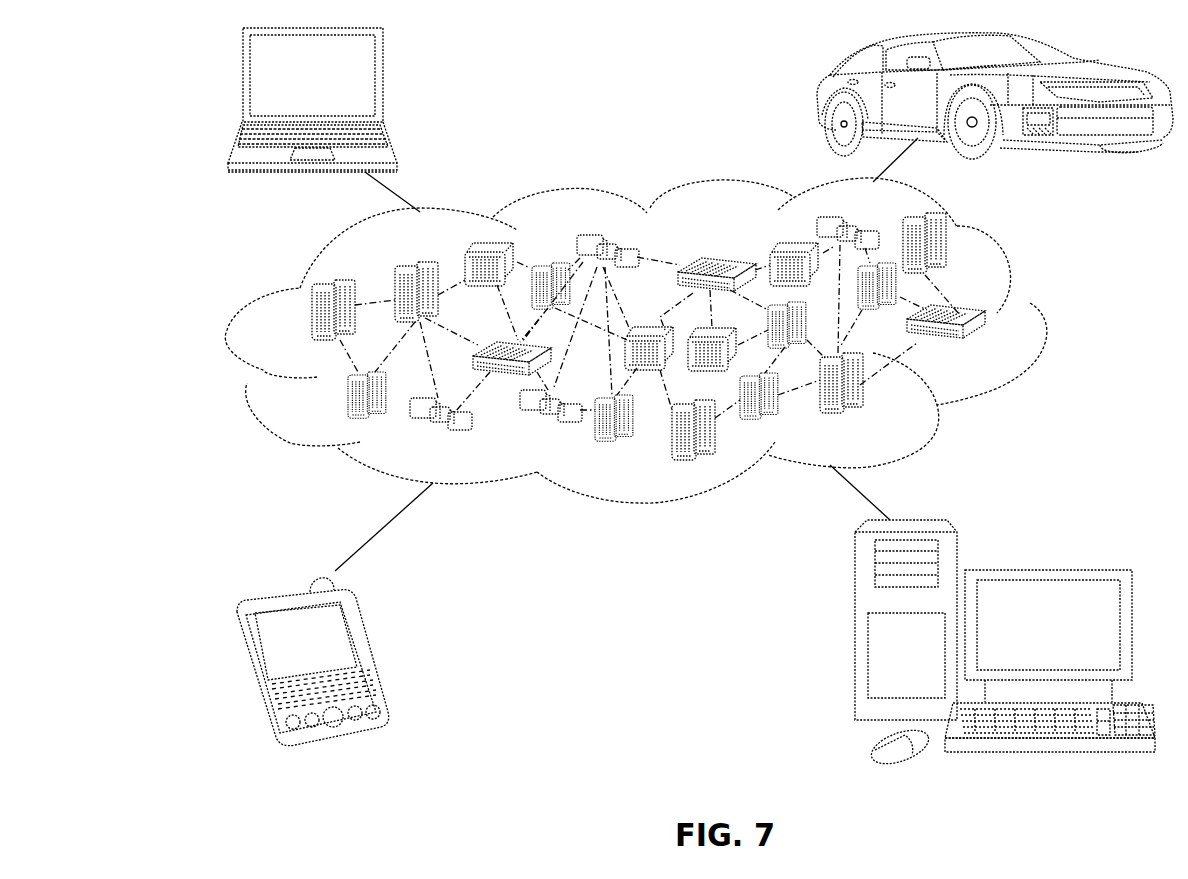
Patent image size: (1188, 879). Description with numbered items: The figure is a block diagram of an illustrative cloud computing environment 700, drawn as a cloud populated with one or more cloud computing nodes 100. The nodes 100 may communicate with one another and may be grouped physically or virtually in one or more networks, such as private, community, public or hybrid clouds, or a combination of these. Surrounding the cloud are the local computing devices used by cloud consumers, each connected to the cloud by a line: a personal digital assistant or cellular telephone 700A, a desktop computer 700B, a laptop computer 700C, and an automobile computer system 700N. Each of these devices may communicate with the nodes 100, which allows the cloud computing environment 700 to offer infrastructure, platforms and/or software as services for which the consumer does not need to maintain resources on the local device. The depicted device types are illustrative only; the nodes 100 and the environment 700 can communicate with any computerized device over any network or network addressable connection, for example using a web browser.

The laptop computer 700C is at (383, 82).
The automobile computer system 700N is at (822, 98).
The personal digital assistant (PDA) or cellular telephone 700A is at (372, 653).
The desktop computer 700B is at (1043, 570).
The cloud computing environment 700 is at (1048, 320).
The cloud computing nodes 100 is at (988, 346).